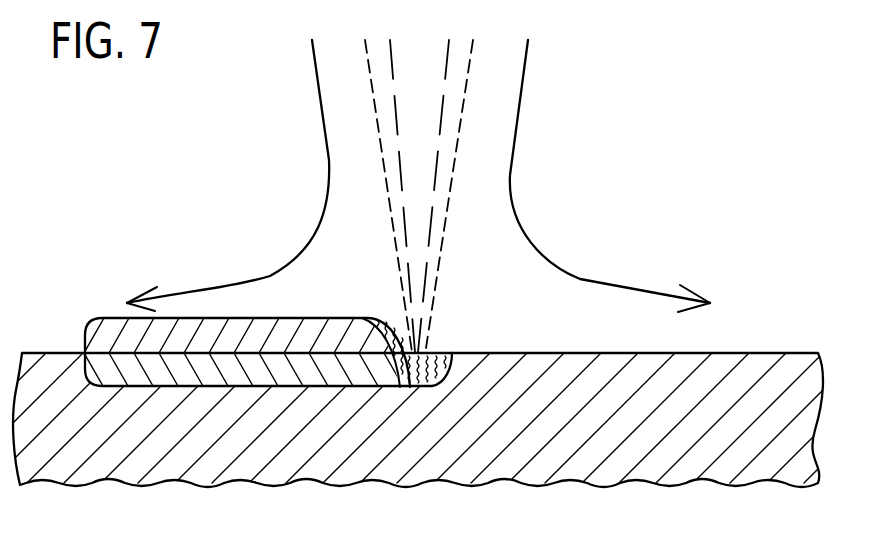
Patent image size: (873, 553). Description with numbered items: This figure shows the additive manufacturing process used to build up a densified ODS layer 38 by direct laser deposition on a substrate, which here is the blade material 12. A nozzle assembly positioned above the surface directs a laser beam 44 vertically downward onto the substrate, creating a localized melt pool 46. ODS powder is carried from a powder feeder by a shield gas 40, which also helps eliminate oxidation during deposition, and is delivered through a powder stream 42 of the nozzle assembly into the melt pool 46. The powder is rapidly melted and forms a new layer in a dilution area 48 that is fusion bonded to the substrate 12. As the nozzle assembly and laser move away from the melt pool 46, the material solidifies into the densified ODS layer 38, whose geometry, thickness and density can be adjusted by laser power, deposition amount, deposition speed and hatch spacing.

The substrate 12 is at (757, 372).
The ODS layer 38 is at (303, 335).
The shield gas 40 is at (573, 273).
The powder stream 42 is at (457, 155).
The laser beam 44 is at (447, 72).
The melt pool 46 is at (427, 370).
The dilution area 48 is at (243, 375).